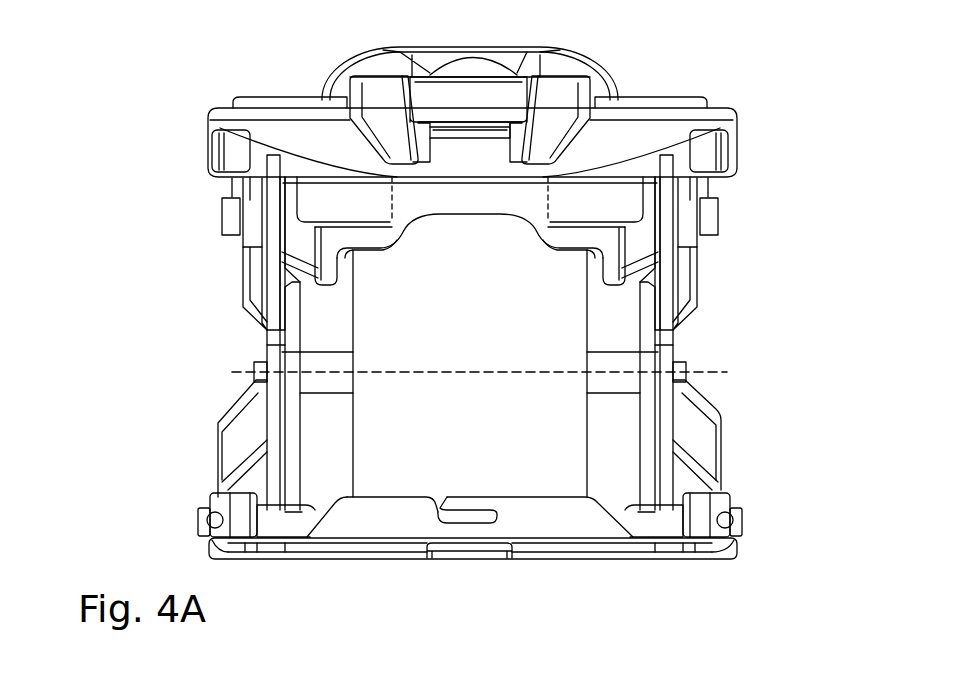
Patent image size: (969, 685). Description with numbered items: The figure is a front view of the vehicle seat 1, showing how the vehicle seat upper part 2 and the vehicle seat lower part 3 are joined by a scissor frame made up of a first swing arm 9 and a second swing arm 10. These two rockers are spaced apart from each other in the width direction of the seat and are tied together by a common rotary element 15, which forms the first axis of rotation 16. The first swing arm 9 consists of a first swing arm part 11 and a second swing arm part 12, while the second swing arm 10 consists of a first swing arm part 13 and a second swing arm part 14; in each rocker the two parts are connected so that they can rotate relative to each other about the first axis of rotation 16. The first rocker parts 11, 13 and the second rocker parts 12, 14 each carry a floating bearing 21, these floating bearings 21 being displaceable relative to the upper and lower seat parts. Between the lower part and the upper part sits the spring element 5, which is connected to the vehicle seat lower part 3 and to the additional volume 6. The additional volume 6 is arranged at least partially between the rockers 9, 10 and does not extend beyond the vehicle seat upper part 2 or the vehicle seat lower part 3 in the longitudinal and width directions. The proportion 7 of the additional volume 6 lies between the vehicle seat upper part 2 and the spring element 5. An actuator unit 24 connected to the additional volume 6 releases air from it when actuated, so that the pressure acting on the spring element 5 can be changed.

The vehicle seat 1 is at (762, 45).
The vehicle seat upper part 2 is at (678, 108).
The vehicle seat lower part 3 is at (556, 533).
The spring element 5 is at (577, 458).
The additional volume 6 is at (603, 226).
The proportion of the additional volume 7 is at (512, 198).
The first swing arm 9 is at (705, 352).
The second swing arm 10 is at (228, 342).
The first swing arm part 11 is at (647, 443).
The second swing arm part 12 is at (707, 443).
The first swing arm part 13 is at (297, 477).
The second swing arm part 14 is at (230, 442).
The common rotary element 15 is at (615, 387).
The first axis of rotation 16 is at (727, 372).
The floating bearing 21 is at (298, 528).
The actuator unit 24 is at (370, 80).